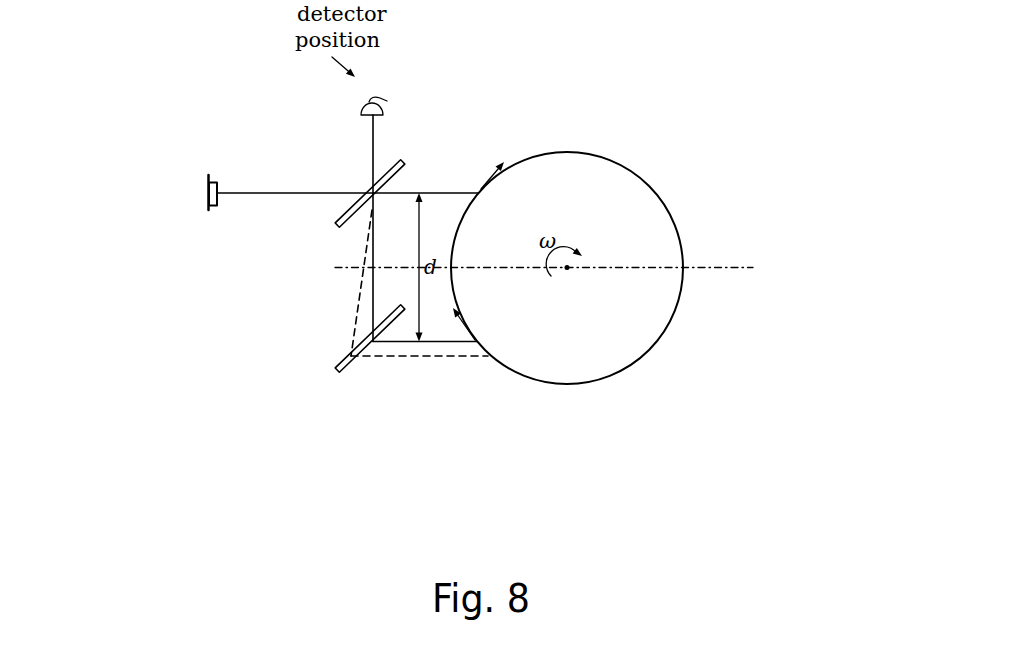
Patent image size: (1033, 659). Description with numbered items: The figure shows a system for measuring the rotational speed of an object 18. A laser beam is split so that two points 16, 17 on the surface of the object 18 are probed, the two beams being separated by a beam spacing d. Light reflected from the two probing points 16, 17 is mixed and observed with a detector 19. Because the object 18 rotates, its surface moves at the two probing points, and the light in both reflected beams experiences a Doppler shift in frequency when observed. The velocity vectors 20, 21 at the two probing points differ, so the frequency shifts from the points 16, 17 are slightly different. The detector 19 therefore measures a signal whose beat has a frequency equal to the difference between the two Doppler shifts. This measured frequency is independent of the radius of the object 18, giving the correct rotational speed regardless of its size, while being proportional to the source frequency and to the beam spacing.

The probing point 16 is at (478, 193).
The probing point 17 is at (477, 341).
The object 18 is at (642, 180).
The detector 19 is at (384, 107).
The velocity vector 20 is at (460, 318).
The velocity vector 21 is at (497, 172).